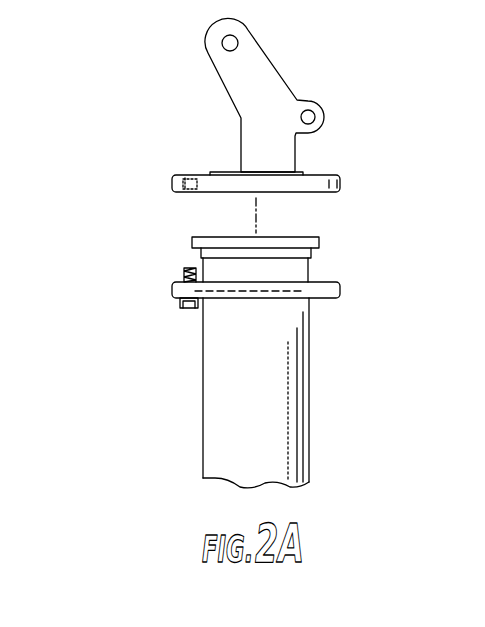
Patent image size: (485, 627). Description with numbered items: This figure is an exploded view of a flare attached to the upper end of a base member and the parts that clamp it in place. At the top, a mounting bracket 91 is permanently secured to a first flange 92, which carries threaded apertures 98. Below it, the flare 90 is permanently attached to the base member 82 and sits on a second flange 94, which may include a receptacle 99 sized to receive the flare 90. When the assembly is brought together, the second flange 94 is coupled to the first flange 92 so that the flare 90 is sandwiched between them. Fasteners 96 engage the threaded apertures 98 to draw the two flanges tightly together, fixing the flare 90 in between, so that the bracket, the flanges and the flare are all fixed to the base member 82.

The mounting bracket 91 is at (287, 81).
The first flange 92 is at (340, 182).
The threaded apertures 98 is at (185, 192).
The flare 90 is at (319, 245).
The second flange 94 is at (340, 295).
The receptacle 99 is at (240, 288).
The fasteners 96 is at (183, 313).
The base member 82 is at (309, 406).